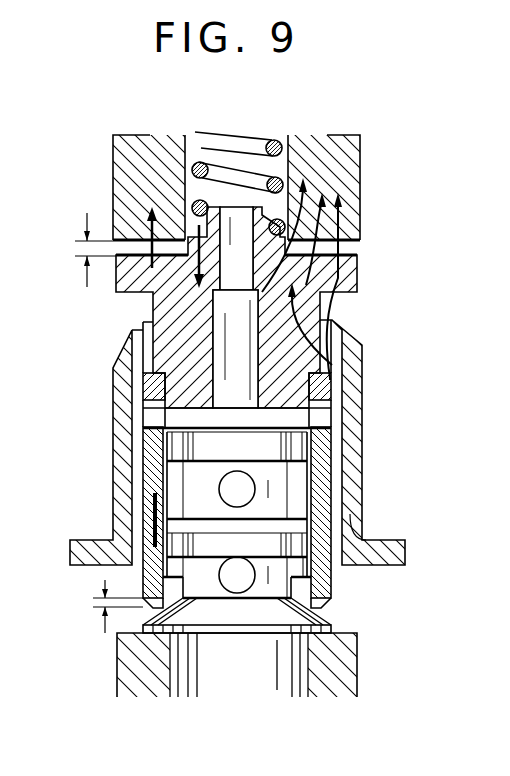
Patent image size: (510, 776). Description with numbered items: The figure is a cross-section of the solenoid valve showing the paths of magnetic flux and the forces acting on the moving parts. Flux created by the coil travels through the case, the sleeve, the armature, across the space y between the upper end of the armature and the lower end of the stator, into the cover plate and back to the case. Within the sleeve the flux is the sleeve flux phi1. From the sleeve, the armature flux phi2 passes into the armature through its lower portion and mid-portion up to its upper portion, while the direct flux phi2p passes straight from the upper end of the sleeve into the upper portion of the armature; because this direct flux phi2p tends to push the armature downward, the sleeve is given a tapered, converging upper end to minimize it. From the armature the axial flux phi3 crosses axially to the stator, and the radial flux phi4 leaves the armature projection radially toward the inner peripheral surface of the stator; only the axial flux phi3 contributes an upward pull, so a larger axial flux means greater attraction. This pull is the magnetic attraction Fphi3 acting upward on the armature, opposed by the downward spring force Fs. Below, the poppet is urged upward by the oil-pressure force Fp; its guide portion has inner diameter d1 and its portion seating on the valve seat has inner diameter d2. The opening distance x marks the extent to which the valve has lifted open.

The magnetic flux in the sleeve phi1 is at (356, 518).
The upward force by oil pressure Fp is at (150, 513).
The inner diameter of the guide portion of the poppet d1 is at (300, 514).
The inner diameter of the seating portion of the poppet d2 is at (287, 587).
The valve opening extent x is at (107, 606).
The space between armature and stator y is at (86, 250).
The magnetic attraction by magnetic flux φ3 Fphi3 is at (157, 222).
The downward spring force Fs is at (189, 269).
The radial magnetic flux from armature projection to stator phi4 is at (287, 225).
The axial magnetic flux from armature to stator phi3 is at (329, 275).
The magnetic flux from sleeve through armature lower and mid portions phi2 is at (304, 324).
The magnetic flux passing directly from sleeve upper end to armature upper portion phi2p is at (353, 335).